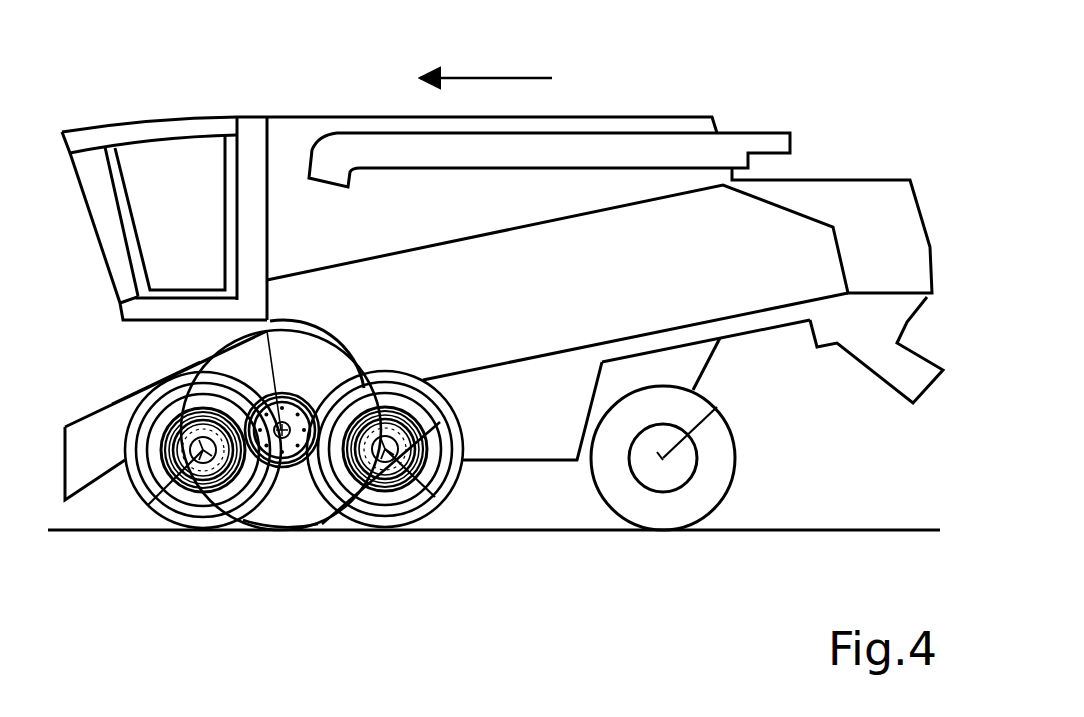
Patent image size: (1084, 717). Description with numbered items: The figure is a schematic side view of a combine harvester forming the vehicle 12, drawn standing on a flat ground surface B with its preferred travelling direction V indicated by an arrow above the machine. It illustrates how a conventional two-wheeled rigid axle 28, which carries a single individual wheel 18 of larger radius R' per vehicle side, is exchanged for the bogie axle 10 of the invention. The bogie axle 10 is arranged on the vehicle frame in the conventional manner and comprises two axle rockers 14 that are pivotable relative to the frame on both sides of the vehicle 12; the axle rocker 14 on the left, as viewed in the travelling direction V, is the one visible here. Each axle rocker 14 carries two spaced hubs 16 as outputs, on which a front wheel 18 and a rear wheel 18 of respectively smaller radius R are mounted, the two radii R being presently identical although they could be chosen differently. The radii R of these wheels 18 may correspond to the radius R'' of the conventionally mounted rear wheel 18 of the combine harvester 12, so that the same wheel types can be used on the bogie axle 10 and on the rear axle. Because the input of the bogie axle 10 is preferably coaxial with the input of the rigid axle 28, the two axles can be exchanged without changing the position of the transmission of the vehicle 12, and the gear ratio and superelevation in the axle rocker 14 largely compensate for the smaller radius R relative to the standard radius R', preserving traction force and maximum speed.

The bogie axle 10 is at (322, 542).
The vehicle 12 is at (226, 105).
The axle rocker 14 is at (330, 418).
The hubs 16 is at (112, 400).
The wheels 18 is at (188, 520).
The rigid axle 28 is at (264, 476).
The ground surface B is at (523, 533).
The tire radius R is at (286, 514).
The tire radius of rigid axle wheel R' is at (267, 428).
The radius of rear wheel R'' is at (739, 422).
The preferred travelling direction V is at (480, 78).